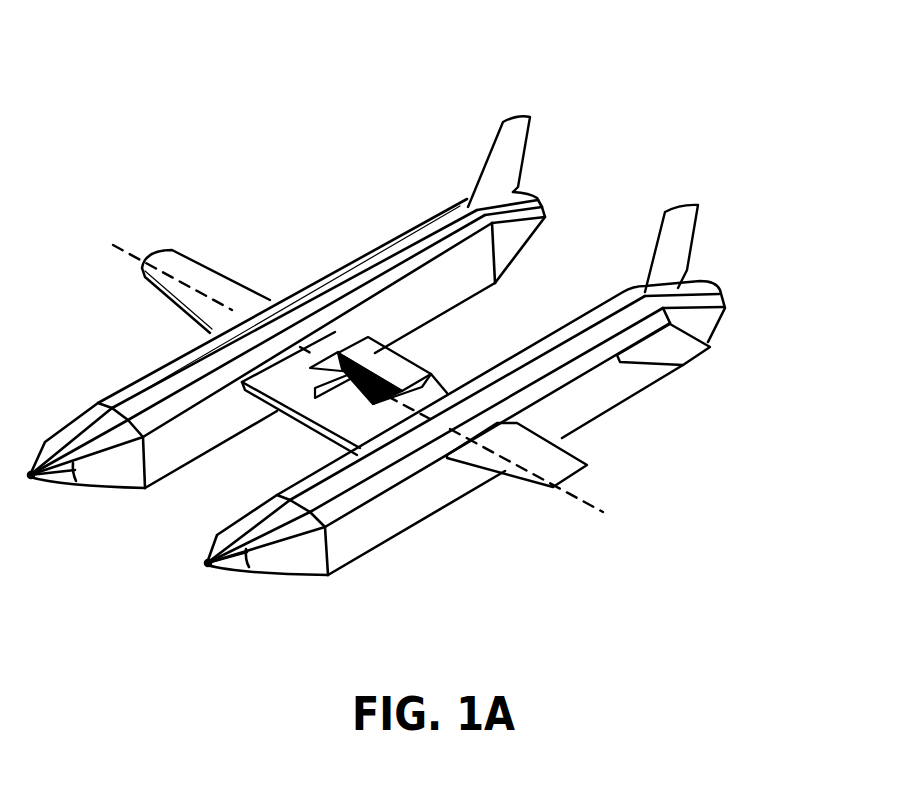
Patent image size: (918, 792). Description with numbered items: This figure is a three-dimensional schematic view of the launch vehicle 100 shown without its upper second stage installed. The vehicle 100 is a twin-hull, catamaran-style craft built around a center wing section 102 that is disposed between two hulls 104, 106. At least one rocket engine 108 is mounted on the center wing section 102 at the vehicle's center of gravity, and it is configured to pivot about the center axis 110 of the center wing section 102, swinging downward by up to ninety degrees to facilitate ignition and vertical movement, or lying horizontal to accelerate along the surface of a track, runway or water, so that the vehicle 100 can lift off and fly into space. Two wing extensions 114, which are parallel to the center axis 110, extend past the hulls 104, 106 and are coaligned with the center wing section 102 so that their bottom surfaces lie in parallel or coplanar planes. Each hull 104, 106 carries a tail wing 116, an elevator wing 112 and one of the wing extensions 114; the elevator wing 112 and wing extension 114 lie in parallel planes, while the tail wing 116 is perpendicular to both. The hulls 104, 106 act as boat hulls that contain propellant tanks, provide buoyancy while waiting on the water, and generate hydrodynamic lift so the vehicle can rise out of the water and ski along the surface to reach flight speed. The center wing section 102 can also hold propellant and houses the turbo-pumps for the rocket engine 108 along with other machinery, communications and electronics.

The vehicle 100 is at (648, 143).
The center wing section 102 is at (318, 356).
The hull 104 is at (88, 405).
The hull 106 is at (240, 515).
The rocket engine 108 is at (346, 353).
The center axis 110 is at (548, 480).
The elevator wing 112 is at (666, 351).
The wing extension 114 is at (202, 278).
The tail wing 116 is at (677, 223).